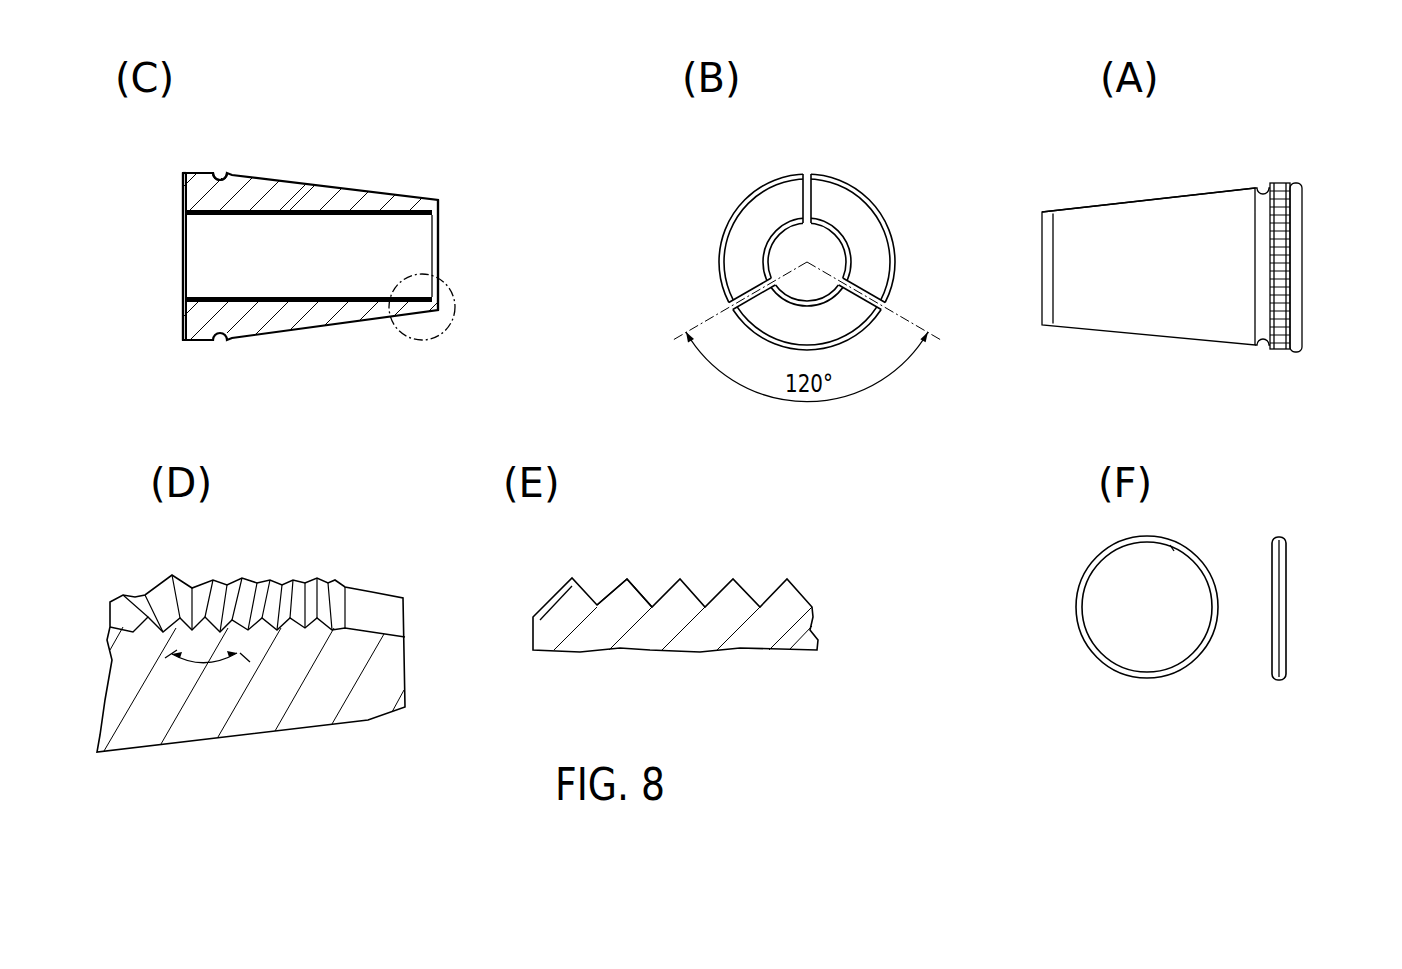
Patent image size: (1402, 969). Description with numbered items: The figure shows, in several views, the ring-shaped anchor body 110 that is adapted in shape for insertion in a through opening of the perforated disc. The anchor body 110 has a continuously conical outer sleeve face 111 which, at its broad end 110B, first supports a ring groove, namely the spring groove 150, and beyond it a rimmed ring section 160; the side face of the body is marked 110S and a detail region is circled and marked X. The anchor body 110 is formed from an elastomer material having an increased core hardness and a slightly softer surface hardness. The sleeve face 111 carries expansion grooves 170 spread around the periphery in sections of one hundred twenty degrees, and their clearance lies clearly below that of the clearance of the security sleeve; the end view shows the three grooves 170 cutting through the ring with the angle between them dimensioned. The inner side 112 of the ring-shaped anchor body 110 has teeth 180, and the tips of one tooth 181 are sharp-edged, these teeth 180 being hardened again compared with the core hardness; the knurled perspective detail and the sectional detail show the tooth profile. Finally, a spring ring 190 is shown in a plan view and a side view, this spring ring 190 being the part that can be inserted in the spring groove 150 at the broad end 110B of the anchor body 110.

The anchor body 110 is at (681, 206).
The broad end 110B is at (183, 197).
The side surface of cap body 110S is at (440, 203).
The conical outer sleeve face 111 is at (1117, 203).
The inner side 112 is at (190, 216).
The spring groove 150 is at (219, 169).
The rimmed ring section 160 is at (196, 172).
The expansion grooves 170 is at (805, 174).
The teeth 180 is at (162, 588).
The tooth 181 is at (627, 579).
The spring ring 190 is at (1105, 549).
The detail region X is at (450, 287).